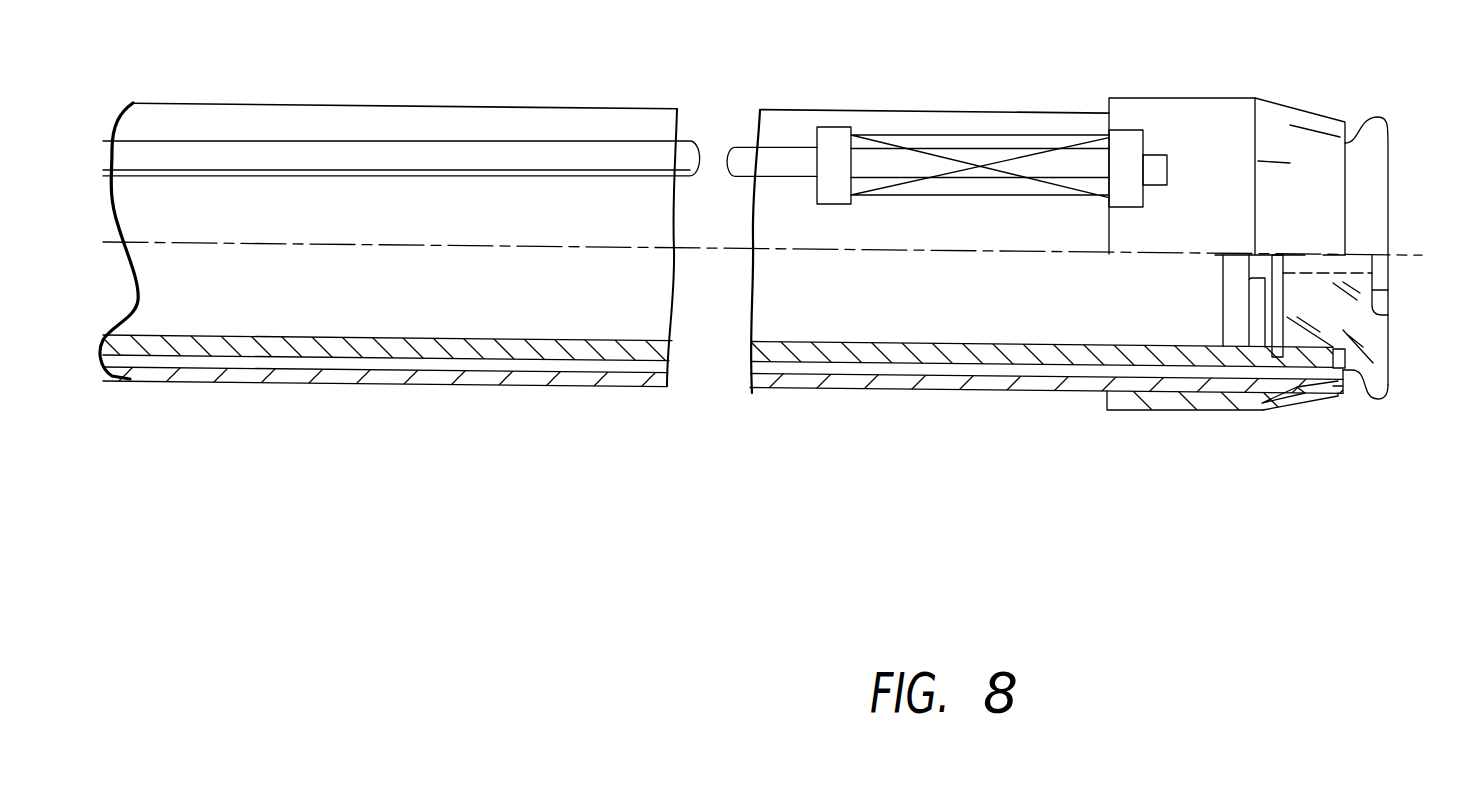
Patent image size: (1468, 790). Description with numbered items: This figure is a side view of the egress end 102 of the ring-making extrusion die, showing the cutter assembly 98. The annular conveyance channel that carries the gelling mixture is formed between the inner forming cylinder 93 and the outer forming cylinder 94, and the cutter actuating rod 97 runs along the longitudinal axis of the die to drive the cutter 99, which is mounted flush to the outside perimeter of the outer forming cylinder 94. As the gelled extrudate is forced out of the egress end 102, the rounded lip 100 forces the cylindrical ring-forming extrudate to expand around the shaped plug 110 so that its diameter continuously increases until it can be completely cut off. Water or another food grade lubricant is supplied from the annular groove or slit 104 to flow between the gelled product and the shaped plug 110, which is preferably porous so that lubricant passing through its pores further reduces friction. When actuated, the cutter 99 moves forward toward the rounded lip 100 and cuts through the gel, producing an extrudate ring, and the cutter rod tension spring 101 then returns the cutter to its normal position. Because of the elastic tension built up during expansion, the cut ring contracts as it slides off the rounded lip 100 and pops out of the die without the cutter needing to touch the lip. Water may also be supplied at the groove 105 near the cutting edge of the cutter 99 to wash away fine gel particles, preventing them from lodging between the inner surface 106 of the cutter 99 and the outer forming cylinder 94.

The inner forming cylinder 93 is at (217, 347).
The outer forming cylinder 94 is at (512, 377).
The cutter actuating rod 97 is at (408, 158).
The cutter assembly 98 is at (1143, 98).
The cutter 99 is at (1267, 413).
The lip 100 is at (1375, 402).
The cutter rod tension spring 101 is at (947, 130).
The egress end 102 is at (1356, 387).
The annular groove or slit 104 is at (1350, 352).
The groove 105 is at (1257, 410).
The inner surface of cutter 106 is at (1158, 396).
The shaped plug 110 is at (1388, 175).